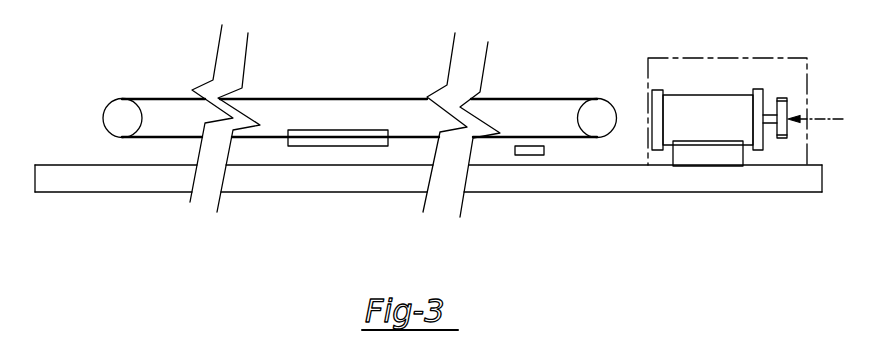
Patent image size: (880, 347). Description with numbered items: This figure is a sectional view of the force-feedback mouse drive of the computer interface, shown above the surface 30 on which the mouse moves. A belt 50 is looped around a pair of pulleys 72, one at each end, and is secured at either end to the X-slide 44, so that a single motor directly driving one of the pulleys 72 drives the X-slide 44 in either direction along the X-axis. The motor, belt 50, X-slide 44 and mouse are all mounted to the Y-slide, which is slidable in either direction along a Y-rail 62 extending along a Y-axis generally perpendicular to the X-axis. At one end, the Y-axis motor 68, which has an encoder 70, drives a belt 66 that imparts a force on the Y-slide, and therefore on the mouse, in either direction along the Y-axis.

The surface 30 is at (48, 175).
The X-slide 44 is at (363, 118).
The belt 50 is at (313, 88).
The Y-rail 62 is at (535, 132).
The belt 66 is at (783, 98).
The motor 68 is at (702, 82).
The encoder 70 is at (659, 78).
The pulleys 72 is at (117, 88).